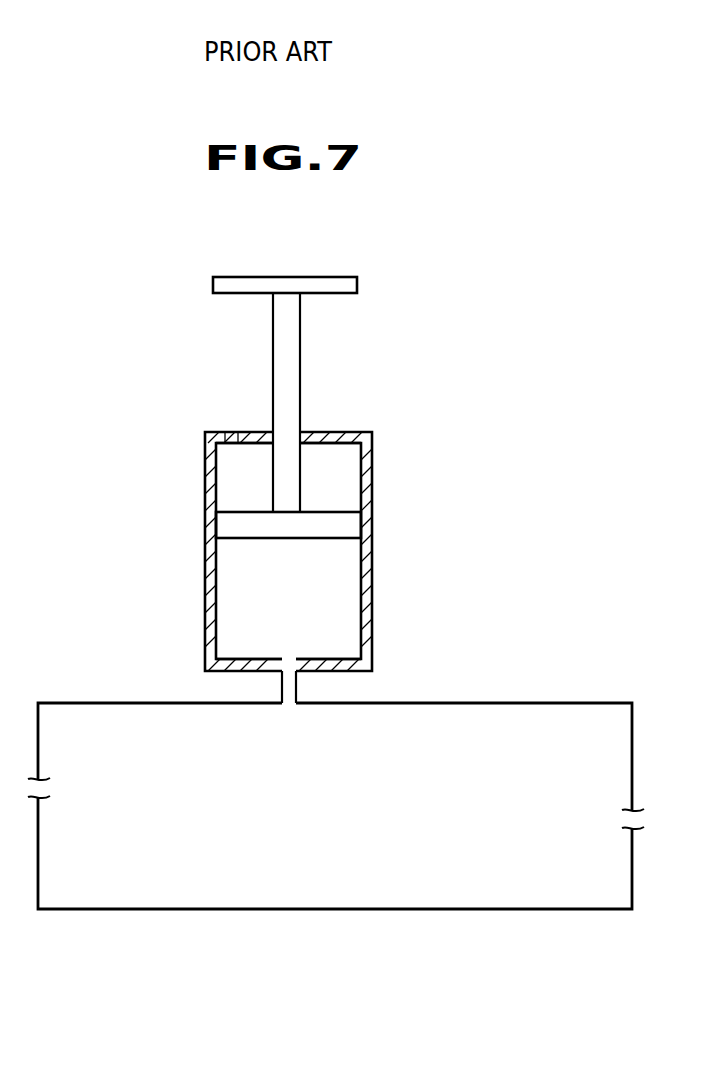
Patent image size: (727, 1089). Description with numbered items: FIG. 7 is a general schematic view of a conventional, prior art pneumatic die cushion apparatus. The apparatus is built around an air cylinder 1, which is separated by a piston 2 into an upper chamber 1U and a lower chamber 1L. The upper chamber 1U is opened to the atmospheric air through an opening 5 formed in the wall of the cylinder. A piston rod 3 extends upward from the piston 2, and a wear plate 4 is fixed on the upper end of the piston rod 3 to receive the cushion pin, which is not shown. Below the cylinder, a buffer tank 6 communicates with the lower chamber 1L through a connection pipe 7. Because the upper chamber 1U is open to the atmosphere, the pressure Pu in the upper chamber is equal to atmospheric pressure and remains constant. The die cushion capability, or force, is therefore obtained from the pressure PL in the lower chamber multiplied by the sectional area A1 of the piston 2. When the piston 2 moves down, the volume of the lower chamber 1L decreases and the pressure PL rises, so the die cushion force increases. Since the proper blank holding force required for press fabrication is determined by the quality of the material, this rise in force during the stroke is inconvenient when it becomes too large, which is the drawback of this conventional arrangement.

The air cylinder 1 is at (372, 497).
The upper chamber 1U is at (346, 463).
The lower chamber 1L is at (352, 588).
The piston 2 is at (350, 520).
The piston rod 3 is at (292, 365).
The wear plate 4 is at (350, 284).
The opening 5 is at (232, 432).
The buffer tank 6 is at (553, 713).
The connection pipe 7 is at (287, 686).
The pressure in the upper chamber Pu is at (228, 470).
The pressure in the lower chamber PL is at (237, 600).
The sectional area of the piston A1 is at (243, 540).